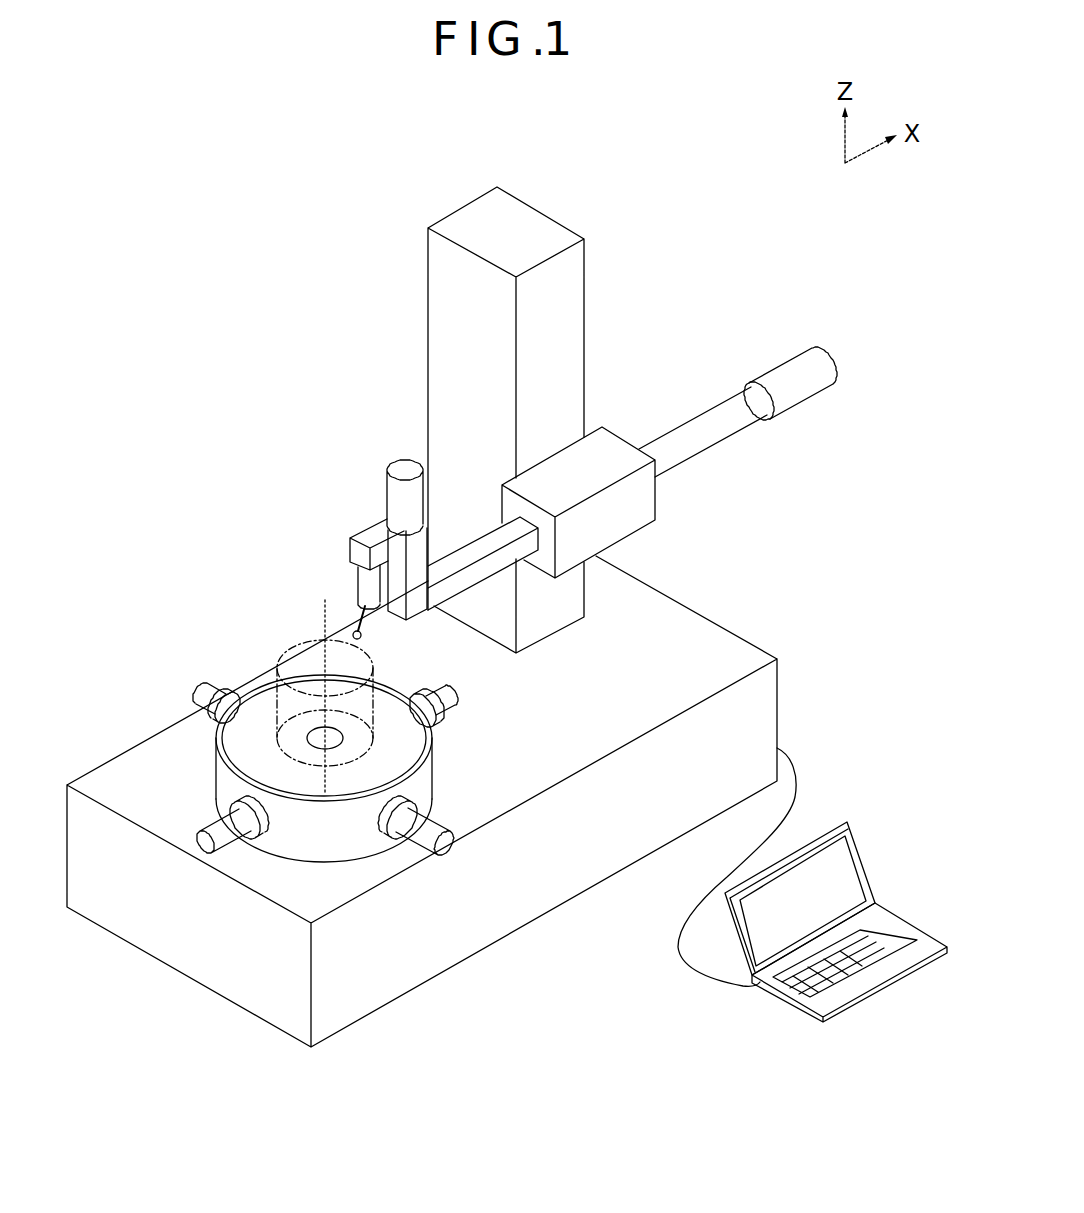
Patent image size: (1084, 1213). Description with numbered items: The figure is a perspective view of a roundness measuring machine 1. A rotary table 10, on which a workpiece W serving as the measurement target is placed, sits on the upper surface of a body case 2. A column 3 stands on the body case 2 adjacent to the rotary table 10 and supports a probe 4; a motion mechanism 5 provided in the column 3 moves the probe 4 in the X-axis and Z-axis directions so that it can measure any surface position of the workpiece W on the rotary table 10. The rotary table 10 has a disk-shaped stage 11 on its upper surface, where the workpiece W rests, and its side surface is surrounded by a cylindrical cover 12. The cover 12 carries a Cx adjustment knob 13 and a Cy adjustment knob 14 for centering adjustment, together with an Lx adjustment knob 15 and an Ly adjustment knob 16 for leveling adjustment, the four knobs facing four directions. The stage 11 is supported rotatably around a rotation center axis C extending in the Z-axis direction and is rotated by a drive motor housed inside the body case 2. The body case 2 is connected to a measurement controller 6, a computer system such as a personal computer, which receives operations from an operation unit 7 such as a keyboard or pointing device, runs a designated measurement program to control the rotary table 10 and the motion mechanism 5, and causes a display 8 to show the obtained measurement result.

The roundness measuring machine 1 is at (190, 186).
The body case 2 is at (107, 893).
The column 3 is at (587, 297).
The probe 4 is at (352, 606).
The motion mechanism 5 is at (385, 365).
The measurement controller 6 is at (801, 896).
The operation unit 7 is at (780, 978).
The display 8 is at (757, 928).
The rotary table 10 is at (204, 760).
The stage 11 is at (266, 698).
The cover 12 is at (361, 870).
The Cx adjustment knob 13 is at (447, 845).
The Cy adjustment knob 14 is at (447, 703).
The Lx adjustment knob 15 is at (200, 702).
The Ly adjustment knob 16 is at (199, 842).
The workpiece W is at (290, 642).
The rotation center axis C is at (322, 623).